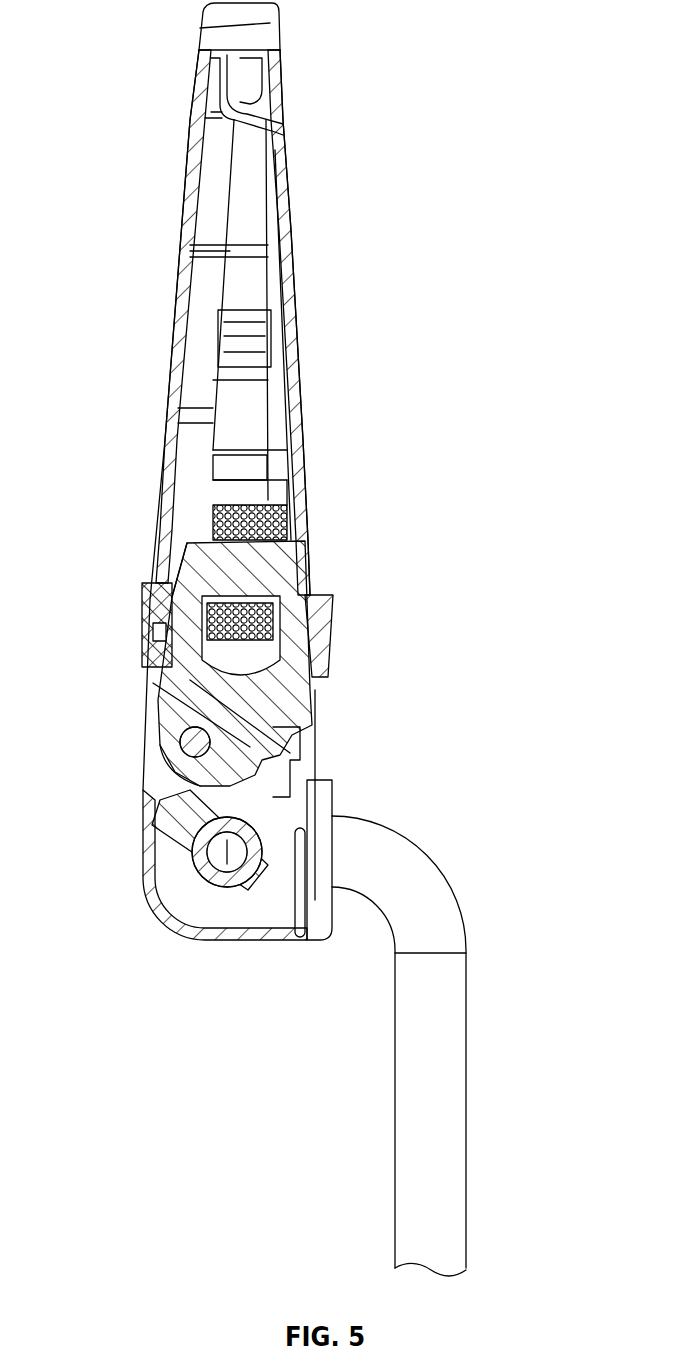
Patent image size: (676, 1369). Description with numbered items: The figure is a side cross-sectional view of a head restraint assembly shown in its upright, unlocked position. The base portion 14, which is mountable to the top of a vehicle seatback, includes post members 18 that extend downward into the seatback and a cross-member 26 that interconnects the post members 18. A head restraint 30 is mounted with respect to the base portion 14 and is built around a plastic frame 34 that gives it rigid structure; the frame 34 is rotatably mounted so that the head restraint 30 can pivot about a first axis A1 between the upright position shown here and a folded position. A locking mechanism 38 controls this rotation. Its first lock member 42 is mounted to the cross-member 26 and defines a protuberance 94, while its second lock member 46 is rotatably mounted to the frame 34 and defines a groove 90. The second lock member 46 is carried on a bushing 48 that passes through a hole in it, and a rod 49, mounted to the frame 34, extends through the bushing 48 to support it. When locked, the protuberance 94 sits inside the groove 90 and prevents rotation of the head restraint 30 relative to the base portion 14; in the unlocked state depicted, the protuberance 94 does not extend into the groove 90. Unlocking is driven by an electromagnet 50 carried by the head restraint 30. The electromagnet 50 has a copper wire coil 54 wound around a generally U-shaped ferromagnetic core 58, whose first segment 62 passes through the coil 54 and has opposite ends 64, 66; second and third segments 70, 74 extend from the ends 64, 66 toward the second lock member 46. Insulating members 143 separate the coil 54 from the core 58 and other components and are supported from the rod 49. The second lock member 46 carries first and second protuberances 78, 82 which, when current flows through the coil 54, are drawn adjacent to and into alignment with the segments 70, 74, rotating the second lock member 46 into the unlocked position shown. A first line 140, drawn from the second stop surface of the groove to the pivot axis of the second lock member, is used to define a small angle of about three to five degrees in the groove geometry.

The base portion 14 is at (448, 1072).
The post members 18 is at (448, 1146).
The cross-member 26 is at (255, 872).
The head restraint 30 is at (288, 203).
The frame 34 is at (240, 310).
The locking mechanism 38 is at (132, 800).
The first lock member 42 is at (185, 882).
The second lock member 46 is at (300, 700).
The bushing 48 is at (245, 735).
The rod 49 is at (190, 735).
The electromagnet 50 is at (340, 553).
The copper wire coil 54 is at (300, 510).
The ferromagnetic core 58 is at (306, 560).
The first segment 62 is at (237, 547).
The end of first segment 64 is at (310, 588).
The end of first segment 66 is at (215, 580).
The second segment 70 is at (326, 640).
The third segment 74 is at (165, 598).
The first protuberance 78 is at (292, 680).
The second protuberance 82 is at (165, 655).
The groove 90 is at (300, 755).
The protuberance 94 is at (316, 770).
The first line 140 is at (222, 500).
The insulating members 143 is at (185, 580).
The first axis A1 is at (187, 920).